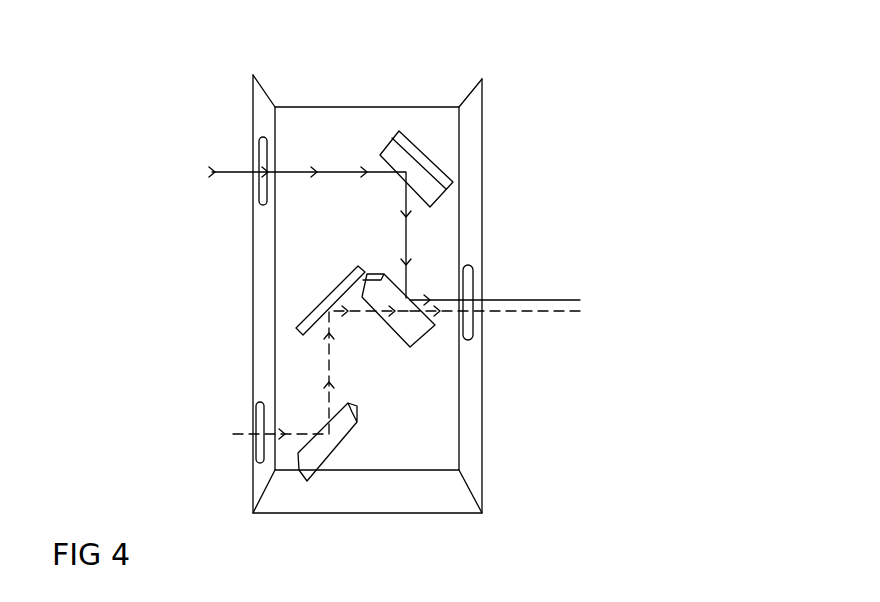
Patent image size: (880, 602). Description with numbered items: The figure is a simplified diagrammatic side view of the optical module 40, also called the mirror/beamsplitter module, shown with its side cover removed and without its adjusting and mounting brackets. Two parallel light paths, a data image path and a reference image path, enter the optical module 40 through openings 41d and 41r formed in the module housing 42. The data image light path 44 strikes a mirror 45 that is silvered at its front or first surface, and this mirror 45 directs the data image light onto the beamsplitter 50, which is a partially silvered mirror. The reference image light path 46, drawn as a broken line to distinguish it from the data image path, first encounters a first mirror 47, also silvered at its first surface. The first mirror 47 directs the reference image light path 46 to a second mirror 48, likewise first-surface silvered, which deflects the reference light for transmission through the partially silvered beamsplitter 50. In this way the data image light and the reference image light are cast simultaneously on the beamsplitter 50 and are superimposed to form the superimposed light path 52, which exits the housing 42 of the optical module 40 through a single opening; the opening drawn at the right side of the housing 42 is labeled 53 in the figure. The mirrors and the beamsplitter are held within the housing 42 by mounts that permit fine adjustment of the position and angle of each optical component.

The optical module 40 is at (582, 80).
The opening 41d is at (261, 203).
The opening 41r is at (261, 419).
The module housing 42 is at (357, 107).
The data image light path 44 is at (297, 172).
The mirror 45 is at (433, 155).
The reference image light path 46 is at (305, 434).
The first mirror 47 is at (353, 430).
The second mirror 48 is at (327, 295).
The beamsplitter 50 is at (421, 340).
The superimposed light path 52 is at (511, 312).
The exit slot 53 is at (467, 272).